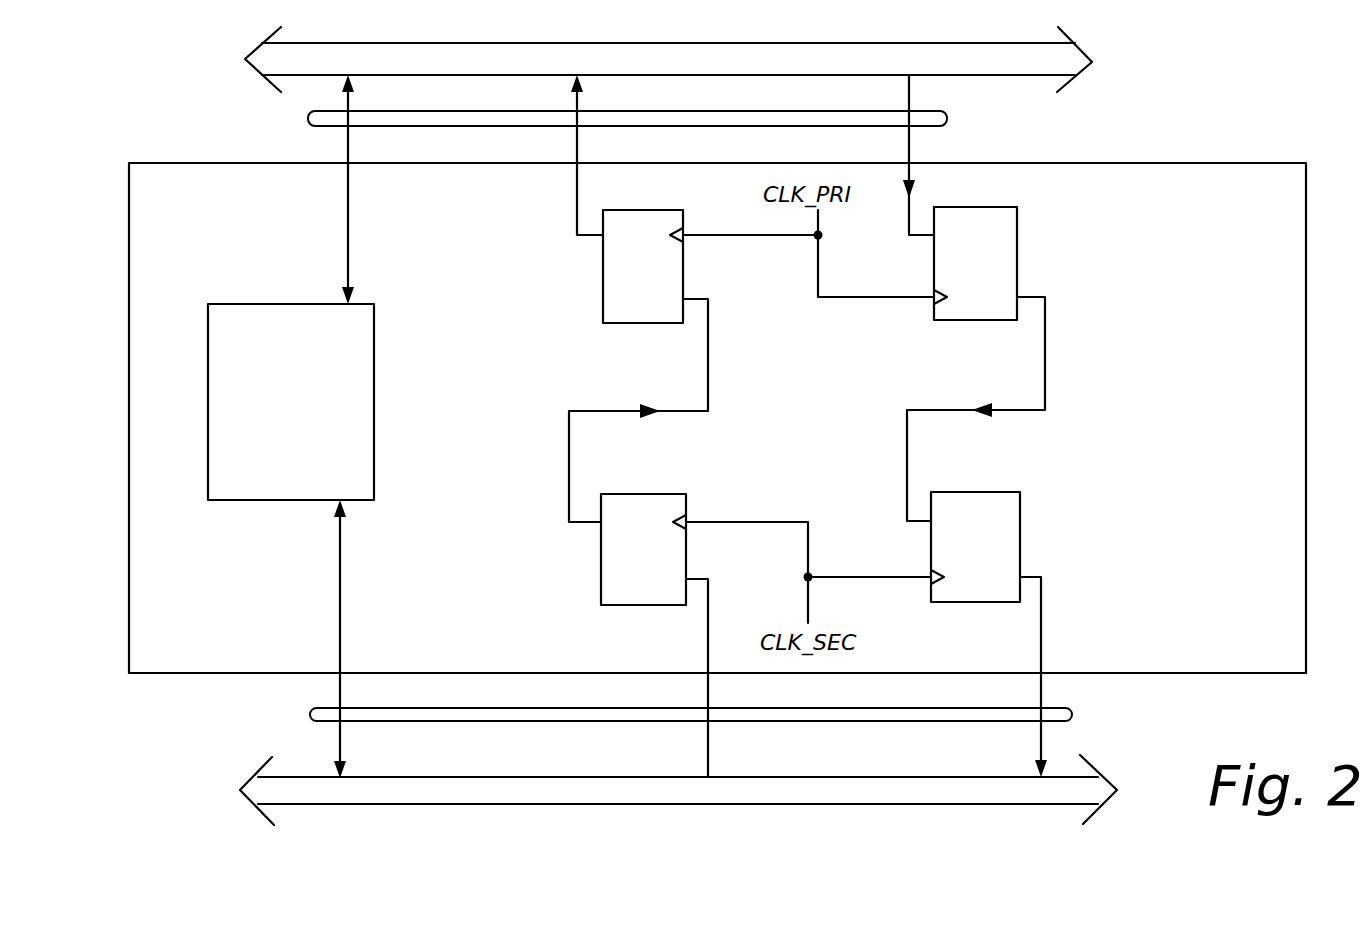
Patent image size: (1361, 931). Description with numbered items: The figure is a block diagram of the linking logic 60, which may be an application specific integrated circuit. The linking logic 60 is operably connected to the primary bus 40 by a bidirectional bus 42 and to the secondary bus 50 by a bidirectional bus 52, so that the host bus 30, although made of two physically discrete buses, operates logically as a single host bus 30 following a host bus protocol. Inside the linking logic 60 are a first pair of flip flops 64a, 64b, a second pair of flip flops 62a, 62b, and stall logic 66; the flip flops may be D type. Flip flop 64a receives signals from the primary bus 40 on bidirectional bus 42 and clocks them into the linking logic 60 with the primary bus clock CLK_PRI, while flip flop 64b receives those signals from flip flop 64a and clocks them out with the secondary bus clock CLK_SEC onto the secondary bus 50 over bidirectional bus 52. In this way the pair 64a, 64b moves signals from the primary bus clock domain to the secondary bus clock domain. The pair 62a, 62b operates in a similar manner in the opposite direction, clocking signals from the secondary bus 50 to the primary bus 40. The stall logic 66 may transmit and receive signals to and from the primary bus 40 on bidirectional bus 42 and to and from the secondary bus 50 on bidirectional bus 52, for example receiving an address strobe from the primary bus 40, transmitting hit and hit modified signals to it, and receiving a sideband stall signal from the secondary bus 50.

The host bus 30 is at (1235, 93).
The primary bus 40 is at (1012, 78).
The bidirectional bus 42 is at (947, 118).
The secondary bus 50 is at (1012, 806).
The bidirectional bus 52 is at (1073, 712).
The linking logic 60 is at (1306, 308).
The flip flop 62a is at (712, 196).
The flip flop 62b is at (686, 494).
The flip flop 64a is at (1018, 216).
The flip flop 64b is at (1021, 494).
The stall logic 66 is at (375, 305).